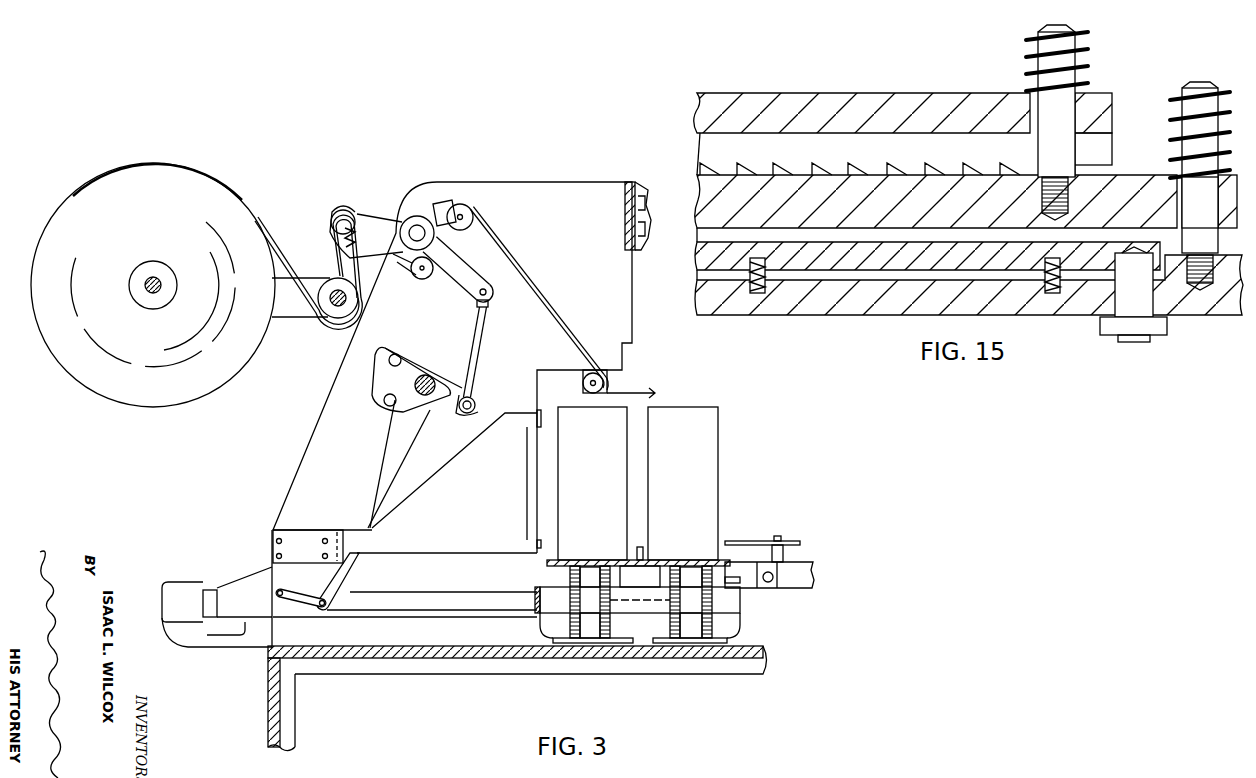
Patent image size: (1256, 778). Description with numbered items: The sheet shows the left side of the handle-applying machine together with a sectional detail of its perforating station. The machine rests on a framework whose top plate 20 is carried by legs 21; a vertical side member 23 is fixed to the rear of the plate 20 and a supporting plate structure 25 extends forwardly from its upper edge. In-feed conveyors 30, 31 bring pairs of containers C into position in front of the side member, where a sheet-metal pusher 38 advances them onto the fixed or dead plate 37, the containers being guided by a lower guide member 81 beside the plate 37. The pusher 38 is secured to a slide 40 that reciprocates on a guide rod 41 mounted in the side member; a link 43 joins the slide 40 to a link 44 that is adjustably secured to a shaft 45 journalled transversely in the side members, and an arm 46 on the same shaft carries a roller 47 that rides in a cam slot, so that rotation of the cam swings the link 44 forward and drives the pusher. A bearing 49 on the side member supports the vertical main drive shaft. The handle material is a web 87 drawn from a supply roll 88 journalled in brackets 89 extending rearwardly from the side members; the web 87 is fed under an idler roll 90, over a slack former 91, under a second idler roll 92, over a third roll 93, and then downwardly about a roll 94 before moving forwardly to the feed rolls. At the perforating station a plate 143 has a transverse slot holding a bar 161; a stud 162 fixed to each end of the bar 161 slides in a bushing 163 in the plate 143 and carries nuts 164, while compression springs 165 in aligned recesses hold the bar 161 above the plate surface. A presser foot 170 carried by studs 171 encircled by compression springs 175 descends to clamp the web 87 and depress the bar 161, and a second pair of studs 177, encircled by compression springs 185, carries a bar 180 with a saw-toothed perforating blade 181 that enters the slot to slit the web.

In FIG. 3, the top plate 20 is at (461, 656).
In FIG. 3, the legs 21 is at (285, 722).
In FIG. 3, the side member 23 is at (346, 481).
In FIG. 3, the supporting plate structure 25 is at (649, 244).
In FIG. 3, the in-feed conveyor 30 is at (673, 560).
In FIG. 3, the in-feed conveyor 31 is at (574, 560).
In FIG. 3, the fixed plate 37 is at (800, 562).
In FIG. 3, the pusher 38 is at (498, 498).
In FIG. 3, the slide 40 is at (309, 615).
In FIG. 3, the guide rod 41 is at (422, 597).
In FIG. 3, the link 43 is at (287, 591).
In FIG. 3, the link 44 is at (343, 580).
In FIG. 3, the shaft 45 is at (428, 374).
In FIG. 3, the arm 46 is at (446, 408).
In FIG. 3, the roller 47 is at (476, 405).
In FIG. 3, the bearing 49 is at (470, 396).
In FIG. 3, the lower guide member 81 is at (767, 540).
In FIG. 3, the web of sheet material 87 is at (284, 255).
In FIG. 3, the supply roll 88 is at (147, 247).
In FIG. 3, the brackets 89 is at (290, 316).
In FIG. 3, the idler roll 90 is at (333, 318).
In FIG. 3, the slack former 91 is at (346, 213).
In FIG. 3, the second idler roll 92 is at (415, 279).
In FIG. 3, the third roll 93 is at (473, 213).
In FIG. 3, the roll 94 is at (595, 373).
In FIG. 3, the containers C is at (597, 487).
In FIG. 15, the plate 143 is at (1217, 314).
In FIG. 15, the bar 161 is at (700, 256).
In FIG. 15, the stud 162 is at (1140, 343).
In FIG. 15, the bushing 163 is at (1112, 300).
In FIG. 15, the nuts 164 is at (1106, 335).
In FIG. 15, the compression springs 165 is at (760, 294).
In FIG. 15, the presser foot 170 is at (968, 193).
In FIG. 15, the studs 171 is at (1212, 233).
In FIG. 15, the compression springs 175 is at (1180, 125).
In FIG. 15, the studs 177 is at (1078, 56).
In FIG. 15, the bar 180 is at (859, 96).
In FIG. 15, the perforating blade 181 is at (906, 159).
In FIG. 15, the compression springs 185 is at (1033, 57).